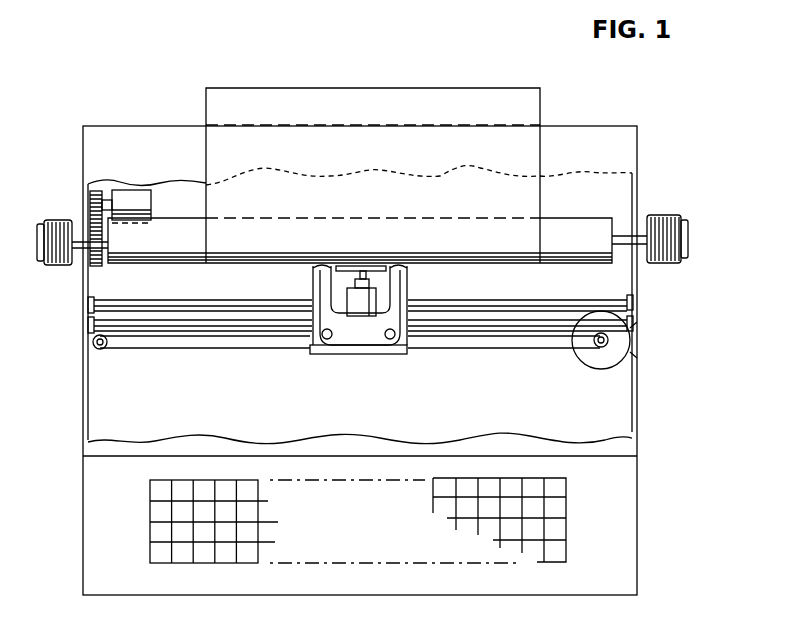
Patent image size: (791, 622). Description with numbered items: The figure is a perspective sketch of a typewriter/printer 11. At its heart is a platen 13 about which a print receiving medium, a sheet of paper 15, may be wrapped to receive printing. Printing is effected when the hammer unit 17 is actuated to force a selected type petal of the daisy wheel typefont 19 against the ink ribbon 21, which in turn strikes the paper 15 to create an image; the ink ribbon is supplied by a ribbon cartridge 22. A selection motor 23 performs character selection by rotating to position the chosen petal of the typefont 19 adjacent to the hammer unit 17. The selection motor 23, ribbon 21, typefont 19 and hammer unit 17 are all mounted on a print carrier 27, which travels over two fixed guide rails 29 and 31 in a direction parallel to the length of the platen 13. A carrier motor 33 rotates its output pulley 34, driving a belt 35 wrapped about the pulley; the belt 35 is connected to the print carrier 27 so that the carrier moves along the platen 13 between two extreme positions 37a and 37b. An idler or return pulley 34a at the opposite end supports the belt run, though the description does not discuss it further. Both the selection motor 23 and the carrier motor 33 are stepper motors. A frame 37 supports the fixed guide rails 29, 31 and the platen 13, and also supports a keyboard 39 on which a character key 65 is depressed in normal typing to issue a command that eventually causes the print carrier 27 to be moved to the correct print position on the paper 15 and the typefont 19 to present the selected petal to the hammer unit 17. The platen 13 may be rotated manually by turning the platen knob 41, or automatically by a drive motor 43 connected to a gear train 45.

The typewriter/printer 11 is at (119, 104).
The platen 13 is at (585, 226).
The sheet of paper 15 is at (278, 95).
The hammer unit 17 is at (372, 275).
The daisy wheel typefont 19 is at (375, 270).
The ink ribbon 21 is at (373, 255).
The ribbon cartridge 22 is at (378, 356).
The selection motor 23 is at (348, 300).
The print carrier 27 is at (330, 375).
The guide rail 29 is at (548, 324).
The guide rail 31 is at (527, 300).
The carrier motor 33 is at (598, 362).
The output pulley 34 is at (597, 344).
The idler pulley 34a is at (97, 350).
The belt 35 is at (263, 347).
The frame 37 is at (643, 400).
The extreme position 37a is at (86, 326).
The extreme position 37b is at (640, 302).
The keyboard 39 is at (311, 516).
The platen knob 41 is at (664, 222).
The drive motor 43 is at (143, 195).
The gear train 45 is at (90, 185).
The character key 65 is at (446, 492).